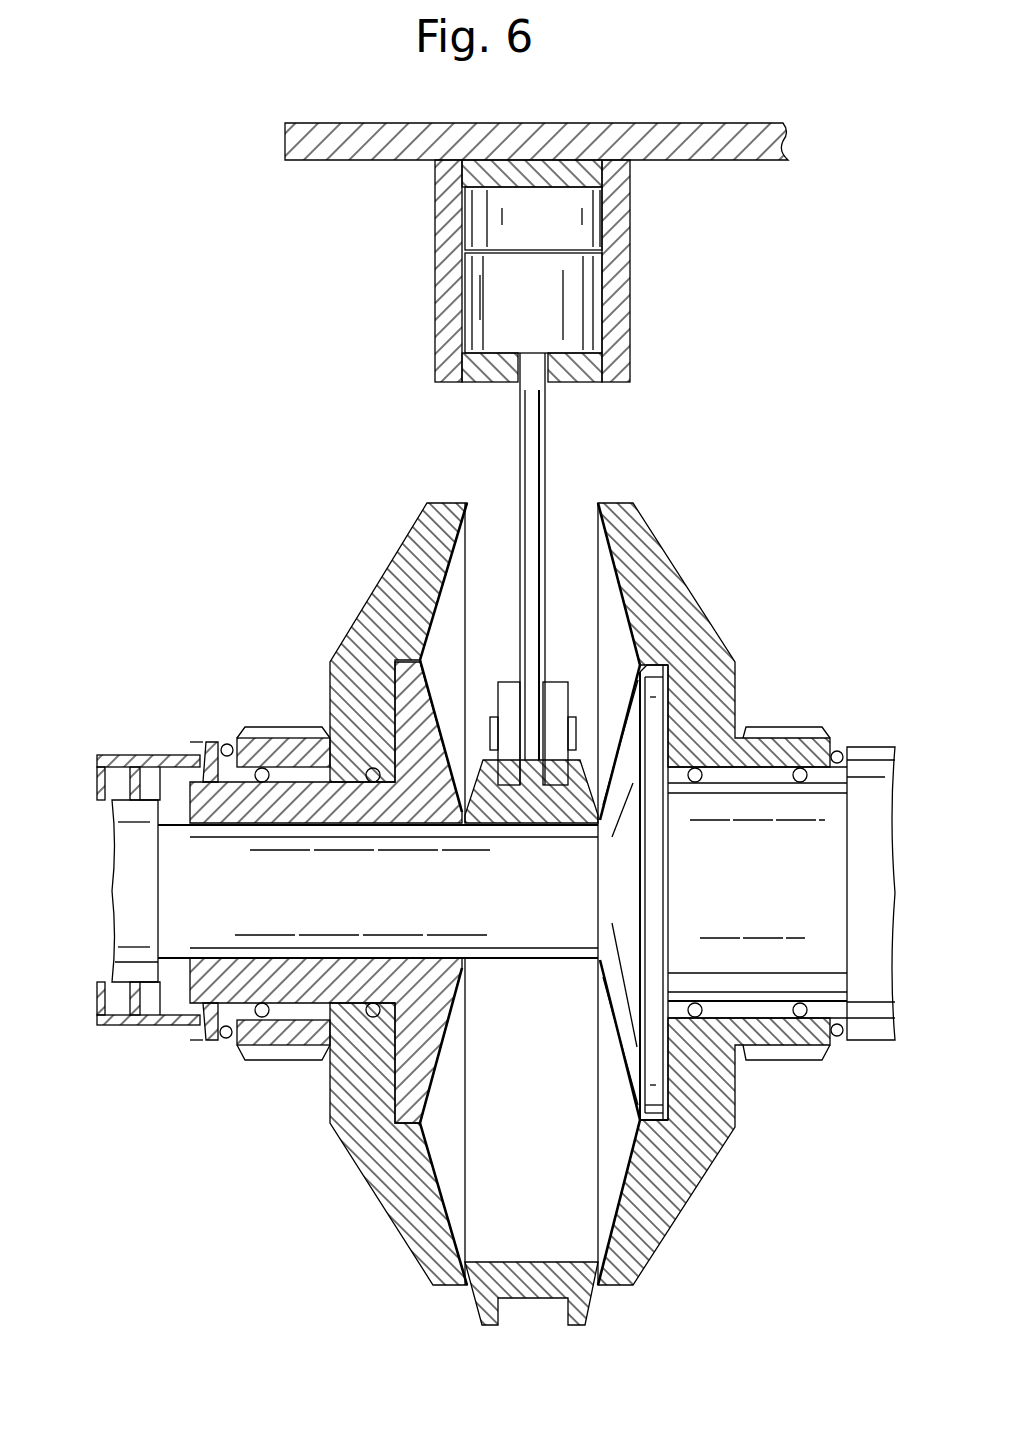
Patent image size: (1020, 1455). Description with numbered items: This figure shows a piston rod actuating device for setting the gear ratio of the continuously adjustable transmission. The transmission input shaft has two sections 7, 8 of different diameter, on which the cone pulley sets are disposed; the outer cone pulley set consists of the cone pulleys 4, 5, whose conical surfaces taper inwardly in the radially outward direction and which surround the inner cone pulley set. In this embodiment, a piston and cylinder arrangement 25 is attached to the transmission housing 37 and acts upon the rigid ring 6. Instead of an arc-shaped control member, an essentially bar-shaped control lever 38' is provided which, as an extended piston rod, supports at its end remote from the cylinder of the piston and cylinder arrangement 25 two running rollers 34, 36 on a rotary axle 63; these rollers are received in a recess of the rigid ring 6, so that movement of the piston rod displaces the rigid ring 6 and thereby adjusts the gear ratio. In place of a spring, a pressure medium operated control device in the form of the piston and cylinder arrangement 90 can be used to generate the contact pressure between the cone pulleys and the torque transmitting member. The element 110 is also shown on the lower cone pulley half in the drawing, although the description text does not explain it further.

The cone pulley 4 is at (408, 568).
The cone pulley 5 is at (655, 568).
The rigid ring 6 is at (582, 1273).
The input shaft section 7 is at (826, 818).
The input shaft section 8 is at (222, 930).
The piston and cylinder arrangement 25 is at (445, 250).
The running roller 34 is at (507, 690).
The running roller 36 is at (555, 690).
The transmission housing 37 is at (372, 145).
The control lever 38' is at (482, 569).
The rotary axle 63 is at (575, 728).
The piston and cylinder arrangement 90 is at (122, 755).
The movable pulley half 110 is at (438, 1202).